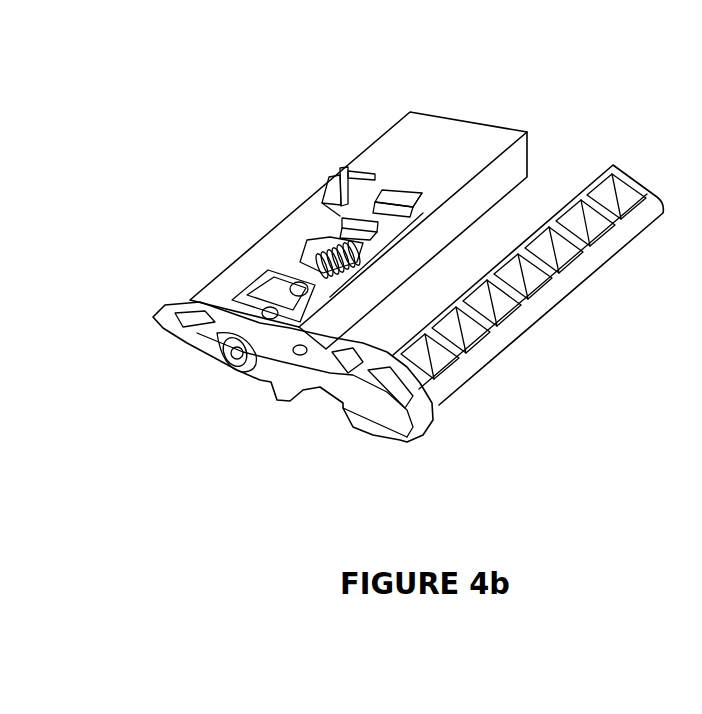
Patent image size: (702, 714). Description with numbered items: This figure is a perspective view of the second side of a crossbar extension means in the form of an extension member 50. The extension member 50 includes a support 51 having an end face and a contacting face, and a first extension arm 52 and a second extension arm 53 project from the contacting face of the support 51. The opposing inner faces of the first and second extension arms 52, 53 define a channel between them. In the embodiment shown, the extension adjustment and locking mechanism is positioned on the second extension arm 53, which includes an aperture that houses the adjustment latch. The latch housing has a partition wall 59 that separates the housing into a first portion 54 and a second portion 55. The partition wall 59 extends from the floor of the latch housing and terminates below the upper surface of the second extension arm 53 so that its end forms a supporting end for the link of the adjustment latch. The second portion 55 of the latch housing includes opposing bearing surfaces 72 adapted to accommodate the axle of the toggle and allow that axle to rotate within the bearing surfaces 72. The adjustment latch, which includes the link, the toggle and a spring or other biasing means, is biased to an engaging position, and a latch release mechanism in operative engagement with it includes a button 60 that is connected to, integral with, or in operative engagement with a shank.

The extension member 50 is at (350, 270).
The support 51 is at (230, 332).
The first extension arm 52 is at (535, 307).
The second extension arm 53 is at (424, 163).
The first portion 54 is at (298, 257).
The second portion 55 is at (347, 175).
The partition wall 59 is at (310, 213).
The button 60 is at (121, 291).
The bearing surfaces 72 is at (345, 205).